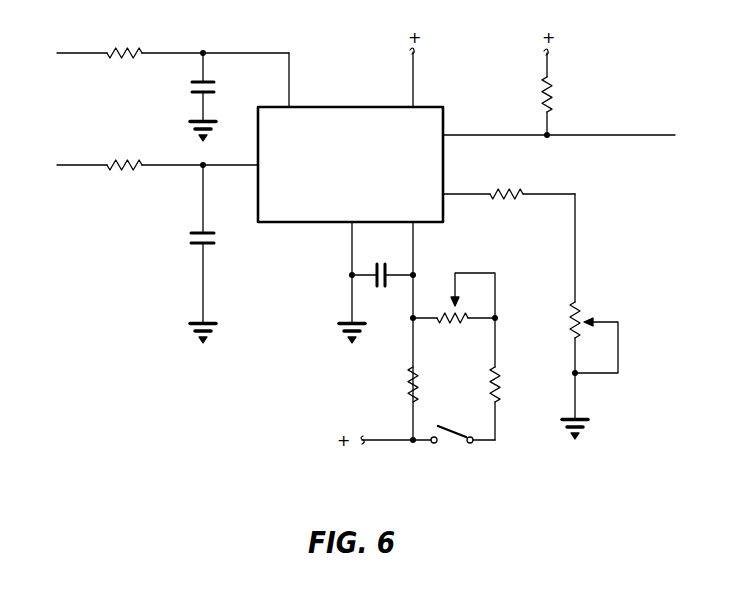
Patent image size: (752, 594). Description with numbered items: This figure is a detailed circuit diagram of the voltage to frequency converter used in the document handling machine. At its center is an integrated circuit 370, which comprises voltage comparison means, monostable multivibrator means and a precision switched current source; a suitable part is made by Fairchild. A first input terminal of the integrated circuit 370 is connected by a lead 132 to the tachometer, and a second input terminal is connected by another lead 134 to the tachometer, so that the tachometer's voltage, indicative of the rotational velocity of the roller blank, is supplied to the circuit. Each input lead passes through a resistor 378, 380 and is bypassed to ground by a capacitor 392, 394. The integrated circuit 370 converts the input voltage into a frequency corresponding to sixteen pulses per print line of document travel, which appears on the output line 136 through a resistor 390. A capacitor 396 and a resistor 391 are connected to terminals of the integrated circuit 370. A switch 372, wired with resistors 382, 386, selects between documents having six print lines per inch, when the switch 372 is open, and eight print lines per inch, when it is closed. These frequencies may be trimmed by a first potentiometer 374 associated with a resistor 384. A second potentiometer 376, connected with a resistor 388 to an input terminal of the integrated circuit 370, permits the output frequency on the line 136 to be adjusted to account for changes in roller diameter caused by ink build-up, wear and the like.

The lead 132 is at (68, 165).
The lead 134 is at (68, 53).
The line 136 is at (650, 135).
The integrated circuit 370 is at (329, 107).
The switch 372 is at (447, 450).
The first potentiometer 374 is at (482, 270).
The second potentiometer 376 is at (605, 308).
The resistor 378 is at (125, 160).
The resistor 380 is at (143, 28).
The resistor 382 is at (407, 380).
The resistor 384 is at (449, 325).
The resistor 386 is at (498, 388).
The resistor 388 is at (570, 318).
The resistor 390 is at (552, 87).
The resistor 391 is at (515, 188).
The capacitor 392 is at (198, 246).
The capacitor 394 is at (208, 83).
The capacitor 396 is at (395, 249).